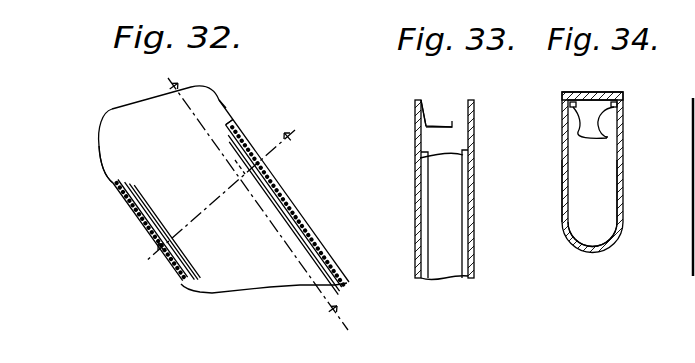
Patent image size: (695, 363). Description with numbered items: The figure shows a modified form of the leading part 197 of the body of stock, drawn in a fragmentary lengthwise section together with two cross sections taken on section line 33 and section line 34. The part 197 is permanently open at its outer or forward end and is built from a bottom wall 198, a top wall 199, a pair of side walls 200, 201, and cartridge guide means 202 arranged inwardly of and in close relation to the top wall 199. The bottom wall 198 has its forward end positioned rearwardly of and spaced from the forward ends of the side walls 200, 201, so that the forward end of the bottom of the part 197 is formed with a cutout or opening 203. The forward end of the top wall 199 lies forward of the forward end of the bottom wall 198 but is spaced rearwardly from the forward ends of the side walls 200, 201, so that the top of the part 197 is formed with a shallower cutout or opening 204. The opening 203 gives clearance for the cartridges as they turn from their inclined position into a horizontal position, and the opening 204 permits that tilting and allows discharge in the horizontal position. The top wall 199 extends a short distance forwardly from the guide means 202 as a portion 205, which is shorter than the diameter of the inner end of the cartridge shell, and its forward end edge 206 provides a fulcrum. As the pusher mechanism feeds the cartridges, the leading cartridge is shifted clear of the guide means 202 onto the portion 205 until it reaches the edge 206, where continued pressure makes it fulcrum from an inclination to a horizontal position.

In FIG. 32, the section line 33— 33 is at (252, 204).
In FIG. 32, the section line 34— 34 is at (216, 202).
In FIG. 32, the leading part of the body 197 is at (309, 224).
In FIG. 33, the leading part of the body 197 is at (474, 168).
In FIG. 34, the leading part of the body 197 is at (624, 213).
In FIG. 32, the bottom wall 198 is at (182, 283).
In FIG. 34, the bottom wall 198 is at (590, 257).
In FIG. 32, the top wall 199 is at (291, 196).
In FIG. 34, the top wall 199 is at (603, 93).
In FIG. 33, the side wall 200 is at (415, 245).
In FIG. 34, the side wall 200 is at (562, 192).
In FIG. 33, the side wall 201 is at (475, 232).
In FIG. 34, the side wall 201 is at (621, 183).
In FIG. 32, the cartridge guide means 202 is at (240, 158).
In FIG. 33, the cartridge guide means 202 is at (422, 167).
In FIG. 34, the cartridge guide means 202 is at (608, 137).
In FIG. 32, the cutout or opening 203 is at (100, 163).
In FIG. 33, the cutout or opening 204 is at (440, 113).
In FIG. 32, the forward portion of the top wall 205 is at (233, 120).
In FIG. 33, the forward portion of the top wall 205 is at (447, 144).
In FIG. 32, the forward end edge 206 is at (223, 103).
In FIG. 33, the forward end edge 206 is at (452, 121).